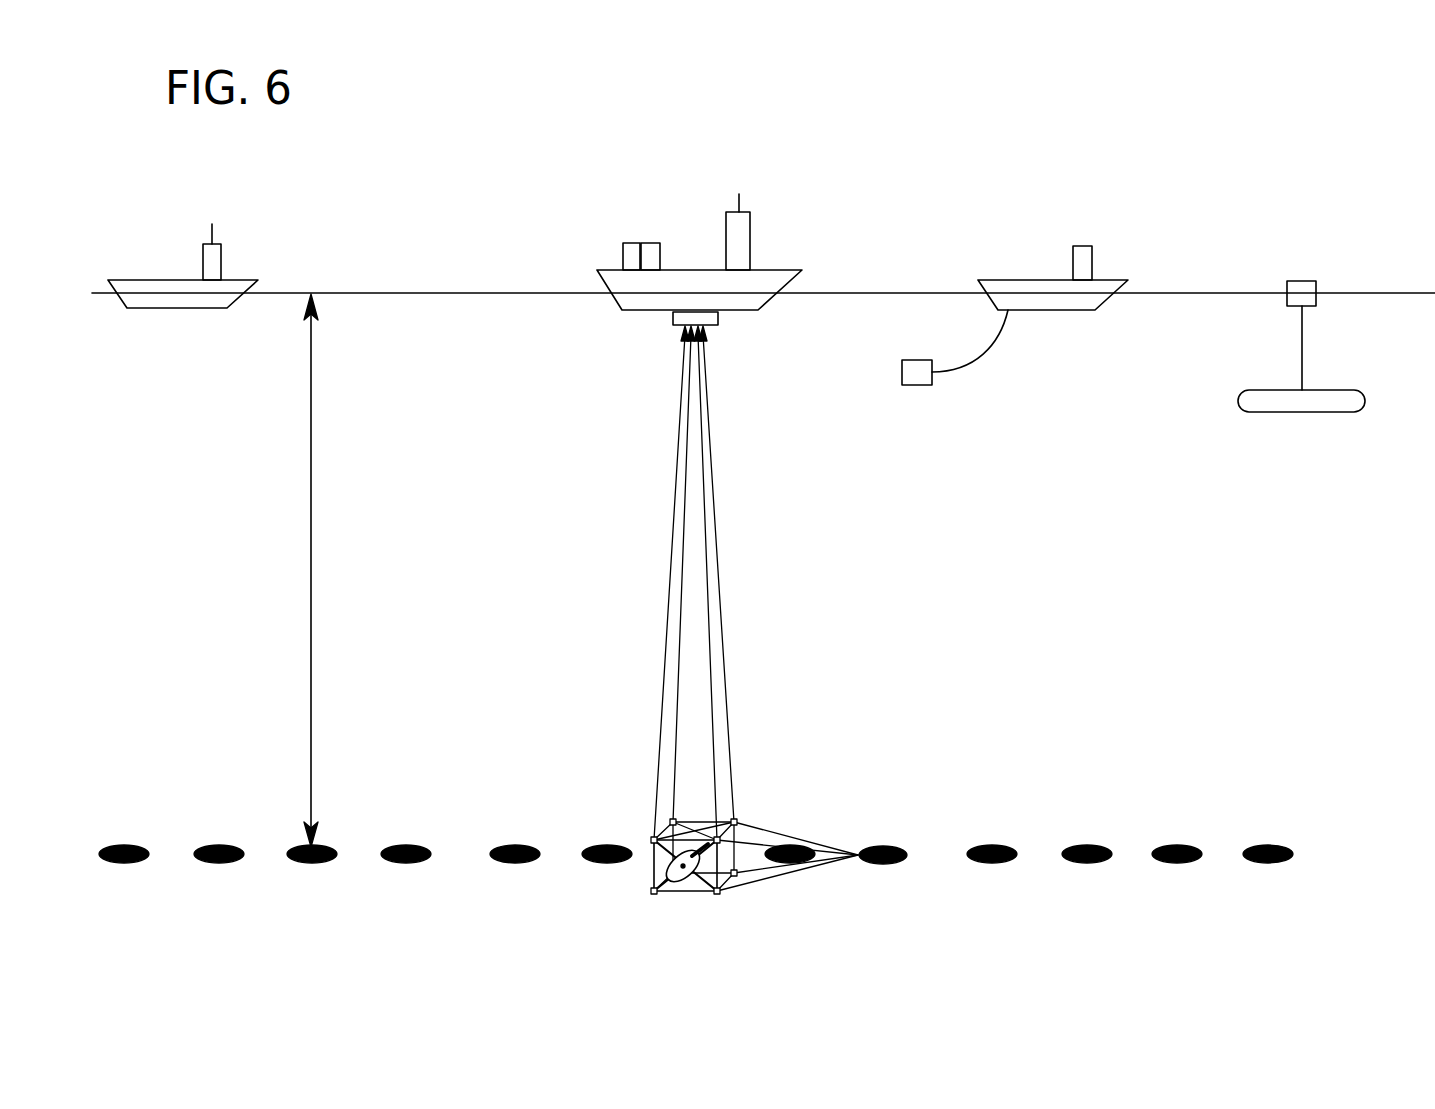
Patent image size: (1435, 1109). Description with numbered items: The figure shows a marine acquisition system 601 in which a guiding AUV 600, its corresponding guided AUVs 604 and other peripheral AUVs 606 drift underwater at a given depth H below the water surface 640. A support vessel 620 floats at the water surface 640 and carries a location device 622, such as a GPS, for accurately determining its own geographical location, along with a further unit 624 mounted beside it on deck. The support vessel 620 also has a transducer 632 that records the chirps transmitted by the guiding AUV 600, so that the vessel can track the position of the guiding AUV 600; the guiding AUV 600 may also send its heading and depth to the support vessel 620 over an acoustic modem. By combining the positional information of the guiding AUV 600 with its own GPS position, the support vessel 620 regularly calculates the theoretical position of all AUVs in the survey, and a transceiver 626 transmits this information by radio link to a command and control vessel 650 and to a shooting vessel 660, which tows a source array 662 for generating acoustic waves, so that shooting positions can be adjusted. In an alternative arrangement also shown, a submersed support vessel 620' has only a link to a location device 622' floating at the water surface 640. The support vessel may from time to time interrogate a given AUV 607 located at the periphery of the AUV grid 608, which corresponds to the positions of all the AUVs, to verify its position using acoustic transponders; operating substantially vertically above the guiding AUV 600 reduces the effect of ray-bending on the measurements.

The guiding AUV 600 is at (690, 878).
The marine acquisition system 601 is at (983, 173).
The guided AUV 604 is at (885, 846).
The other AUV 606 is at (1083, 862).
The given AUV 607 is at (1280, 876).
The AUV grid 608 is at (710, 894).
The support vessel 620 is at (699, 266).
The location device 622 is at (596, 231).
The navigation unit 624 is at (650, 243).
The transceiver 626 is at (739, 198).
The transducer 632 is at (715, 325).
The water surface 640 is at (1193, 293).
The command and control vessel 650 is at (152, 250).
The shooting vessel 660 is at (1024, 250).
The source array 662 is at (915, 387).
The support vessel 620' is at (1320, 381).
The location device 622' is at (1344, 266).
The depth H is at (311, 510).